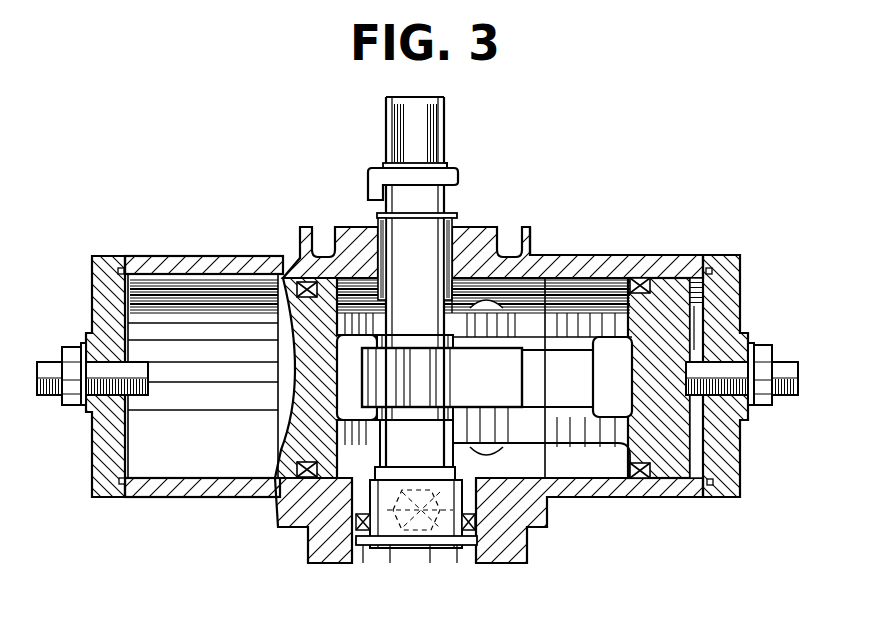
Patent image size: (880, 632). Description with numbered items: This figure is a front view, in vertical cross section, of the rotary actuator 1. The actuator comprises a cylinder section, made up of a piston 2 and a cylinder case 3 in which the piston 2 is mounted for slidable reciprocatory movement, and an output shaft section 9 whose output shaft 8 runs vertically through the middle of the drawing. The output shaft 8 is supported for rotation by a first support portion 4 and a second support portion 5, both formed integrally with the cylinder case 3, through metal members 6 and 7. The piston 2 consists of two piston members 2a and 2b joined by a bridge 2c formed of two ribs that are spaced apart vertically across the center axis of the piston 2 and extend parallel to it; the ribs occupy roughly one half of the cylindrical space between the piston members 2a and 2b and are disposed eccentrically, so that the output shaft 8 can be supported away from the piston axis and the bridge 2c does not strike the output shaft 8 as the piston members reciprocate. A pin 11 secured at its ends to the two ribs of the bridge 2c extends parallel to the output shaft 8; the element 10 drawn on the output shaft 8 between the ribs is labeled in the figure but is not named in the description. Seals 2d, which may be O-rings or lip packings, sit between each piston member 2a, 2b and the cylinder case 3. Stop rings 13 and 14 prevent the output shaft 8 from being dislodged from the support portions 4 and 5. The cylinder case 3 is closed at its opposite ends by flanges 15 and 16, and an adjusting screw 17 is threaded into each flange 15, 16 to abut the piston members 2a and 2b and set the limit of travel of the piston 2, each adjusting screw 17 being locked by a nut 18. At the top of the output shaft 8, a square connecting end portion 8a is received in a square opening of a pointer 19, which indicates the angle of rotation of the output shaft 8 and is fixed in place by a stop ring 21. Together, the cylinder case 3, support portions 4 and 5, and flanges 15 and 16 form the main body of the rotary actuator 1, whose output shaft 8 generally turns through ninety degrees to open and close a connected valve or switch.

The rotary actuator 1 is at (554, 225).
The piston 2 is at (603, 300).
The piston member 2a is at (288, 462).
The piston member 2b is at (683, 470).
The bridge 2c is at (567, 327).
The seals 2d is at (282, 499).
The cylinder case 3 is at (181, 254).
The first support portion 4 is at (313, 524).
The second support portion 5 is at (297, 236).
The metal member 6 is at (481, 507).
The metal member 7 is at (375, 253).
The output shaft 8 is at (425, 243).
The connecting end portion 8a is at (444, 125).
The output shaft section 9 is at (466, 155).
The rotor 10 is at (510, 381).
The pin 11 is at (498, 288).
The stop ring 13 is at (475, 541).
The stop ring 14 is at (377, 214).
The flange 15 is at (104, 260).
The flange 16 is at (725, 262).
The adjusting screw 17 is at (52, 360).
The nut 18 is at (72, 407).
The pointer 19 is at (368, 176).
The stop ring 21 is at (383, 162).